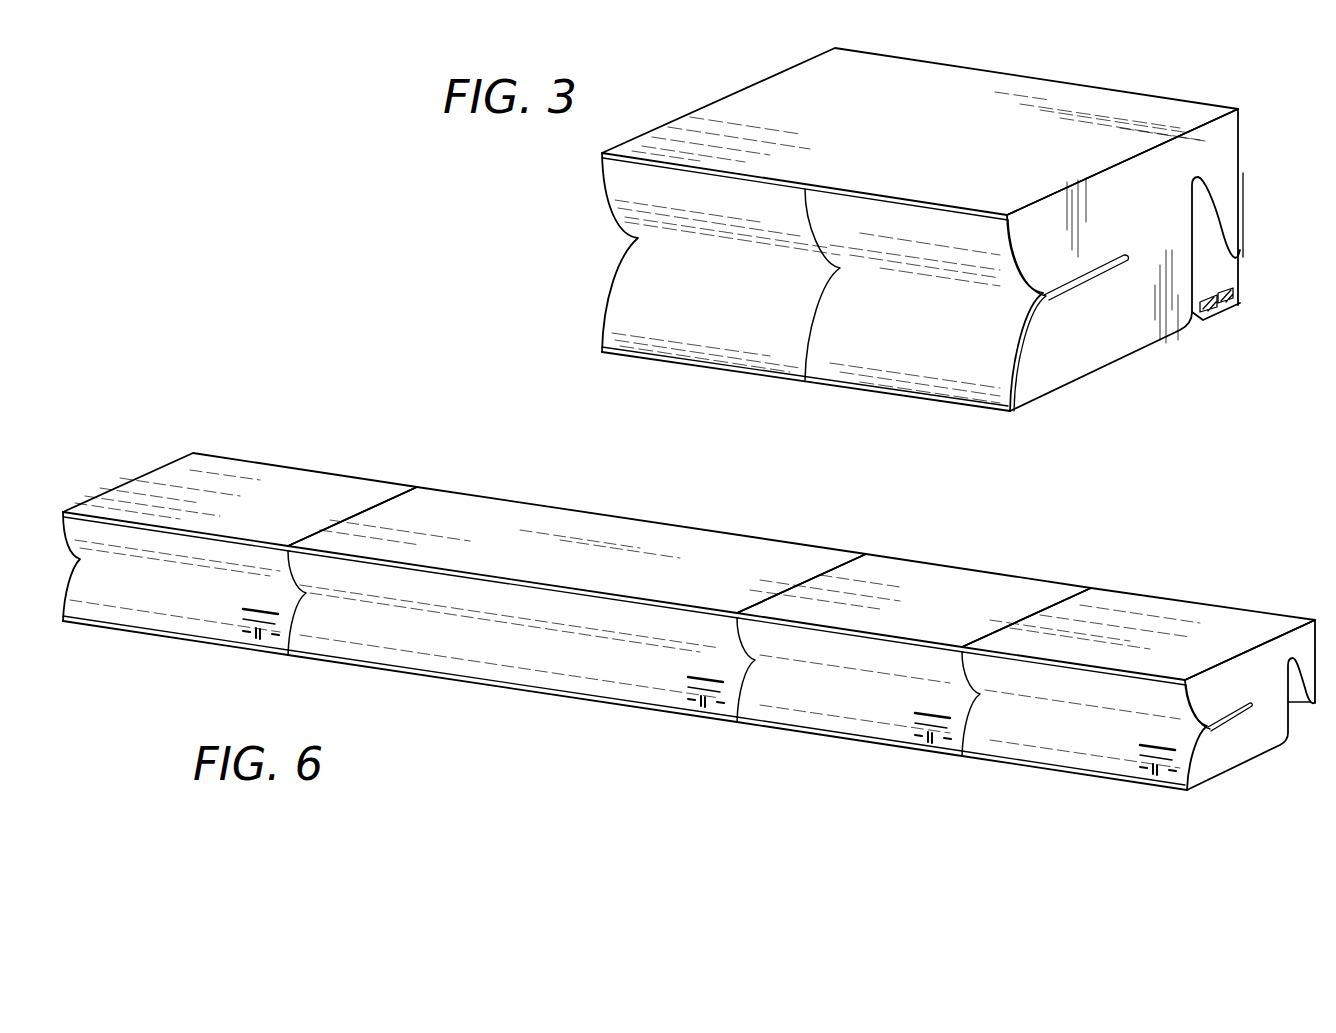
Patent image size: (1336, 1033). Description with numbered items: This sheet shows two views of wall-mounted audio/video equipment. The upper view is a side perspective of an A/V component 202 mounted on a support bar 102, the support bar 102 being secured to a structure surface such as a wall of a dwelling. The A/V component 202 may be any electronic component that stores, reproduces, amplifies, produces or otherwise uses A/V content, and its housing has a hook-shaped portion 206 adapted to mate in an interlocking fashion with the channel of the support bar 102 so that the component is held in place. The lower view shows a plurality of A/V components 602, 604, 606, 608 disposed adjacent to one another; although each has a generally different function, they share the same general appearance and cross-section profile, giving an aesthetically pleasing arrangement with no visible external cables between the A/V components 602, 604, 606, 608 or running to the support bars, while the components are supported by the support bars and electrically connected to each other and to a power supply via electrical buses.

In FIG. 3, the support bar 102 is at (1225, 273).
In FIG. 3, the A/V component 202 is at (1108, 343).
In FIG. 3, the hook-shaped portion 206 is at (1227, 215).
In FIG. 6, the A/V component 602 is at (1028, 747).
In FIG. 6, the A/V component 604 is at (803, 712).
In FIG. 6, the A/V component 606 is at (355, 643).
In FIG. 6, the A/V component 608 is at (130, 612).